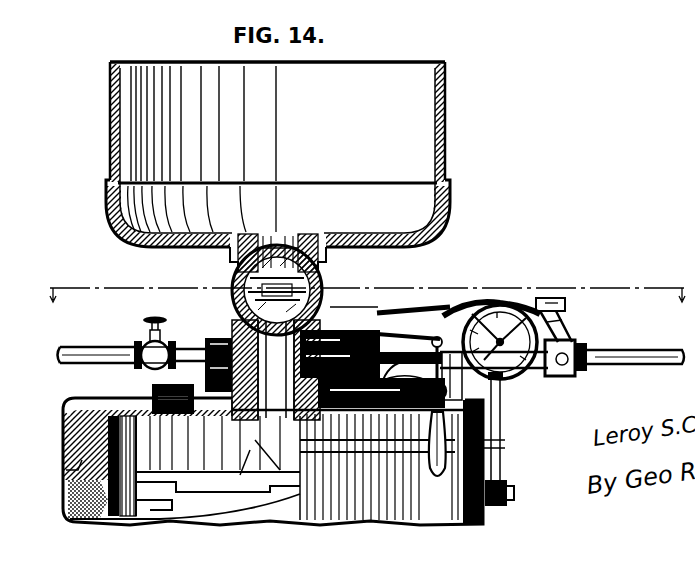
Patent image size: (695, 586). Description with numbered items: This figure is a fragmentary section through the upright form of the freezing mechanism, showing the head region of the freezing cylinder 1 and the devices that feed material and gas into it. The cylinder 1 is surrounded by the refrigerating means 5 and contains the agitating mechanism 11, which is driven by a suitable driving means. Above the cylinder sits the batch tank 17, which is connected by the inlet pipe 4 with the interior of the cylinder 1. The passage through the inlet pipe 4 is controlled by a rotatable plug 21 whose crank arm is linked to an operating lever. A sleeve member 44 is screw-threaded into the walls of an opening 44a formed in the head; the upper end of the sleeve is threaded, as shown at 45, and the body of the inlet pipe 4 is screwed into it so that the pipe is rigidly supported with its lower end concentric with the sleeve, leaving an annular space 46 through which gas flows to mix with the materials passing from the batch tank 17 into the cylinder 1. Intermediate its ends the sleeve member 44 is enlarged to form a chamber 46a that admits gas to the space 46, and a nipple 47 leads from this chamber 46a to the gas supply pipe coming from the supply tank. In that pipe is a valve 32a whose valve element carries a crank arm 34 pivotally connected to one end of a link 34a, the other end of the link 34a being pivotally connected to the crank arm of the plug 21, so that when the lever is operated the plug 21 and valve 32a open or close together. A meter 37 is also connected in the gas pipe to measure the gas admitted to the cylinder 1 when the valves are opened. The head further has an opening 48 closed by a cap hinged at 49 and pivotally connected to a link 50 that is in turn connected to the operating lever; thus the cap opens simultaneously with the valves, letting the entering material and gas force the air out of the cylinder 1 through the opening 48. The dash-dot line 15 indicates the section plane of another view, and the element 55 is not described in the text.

The freezing cylinder 1 is at (500, 512).
The inlet pipe 4 is at (349, 467).
The refrigerating means 5 is at (60, 494).
The agitating mechanism 11 is at (210, 466).
The axis line 15 is at (363, 291).
The batch tank 17 is at (442, 130).
The rotatable plug 21 is at (292, 250).
The valve 32a is at (515, 371).
The crank arm 34 is at (565, 340).
The link 34a is at (467, 308).
The meter 37 is at (512, 372).
The sleeve member 44 is at (332, 426).
The opening 44a is at (212, 396).
The threaded upper end 45 is at (175, 340).
The annular space 46 is at (296, 372).
The chamber 46a is at (220, 345).
The nipple 47 is at (345, 330).
The opening 48 is at (386, 428).
The hinge 49 is at (400, 385).
The link 50 is at (400, 372).
The rod 55 is at (646, 352).